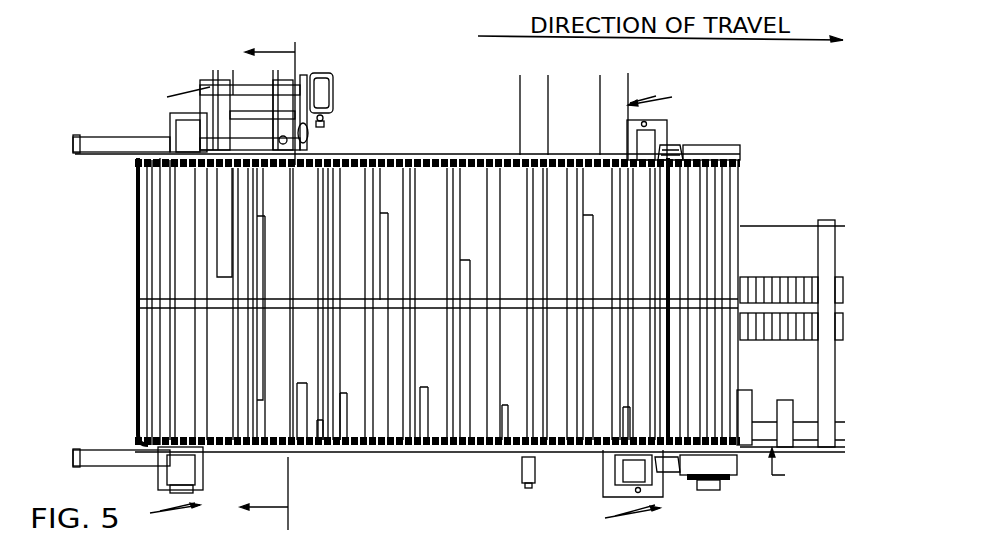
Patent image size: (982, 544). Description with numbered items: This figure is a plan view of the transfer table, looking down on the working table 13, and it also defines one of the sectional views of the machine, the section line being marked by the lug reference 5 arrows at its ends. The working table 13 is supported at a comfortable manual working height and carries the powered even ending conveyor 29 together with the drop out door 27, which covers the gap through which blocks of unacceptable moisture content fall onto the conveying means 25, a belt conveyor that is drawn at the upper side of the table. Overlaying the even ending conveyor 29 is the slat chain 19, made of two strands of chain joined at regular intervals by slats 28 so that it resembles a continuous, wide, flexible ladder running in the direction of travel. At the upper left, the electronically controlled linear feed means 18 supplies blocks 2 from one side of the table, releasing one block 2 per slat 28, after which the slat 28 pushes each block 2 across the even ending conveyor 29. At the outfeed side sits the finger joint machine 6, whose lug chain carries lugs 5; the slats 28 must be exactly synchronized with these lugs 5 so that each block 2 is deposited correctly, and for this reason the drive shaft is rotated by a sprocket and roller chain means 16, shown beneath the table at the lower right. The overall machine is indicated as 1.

The container handling machine 1 is at (460, 303).
The block 2 is at (828, 220).
The lug 5 is at (520, 288).
The finger joint machine 6 is at (790, 381).
The working table 13 is at (448, 287).
The sprocket and roller chain means 16 is at (723, 478).
The linear feed means 18 is at (200, 80).
The slat chain 19 is at (135, 300).
The conveying means 25 is at (592, 124).
The door 27 is at (560, 422).
The slat 28 is at (448, 422).
The even ending conveyor 29 is at (267, 414).